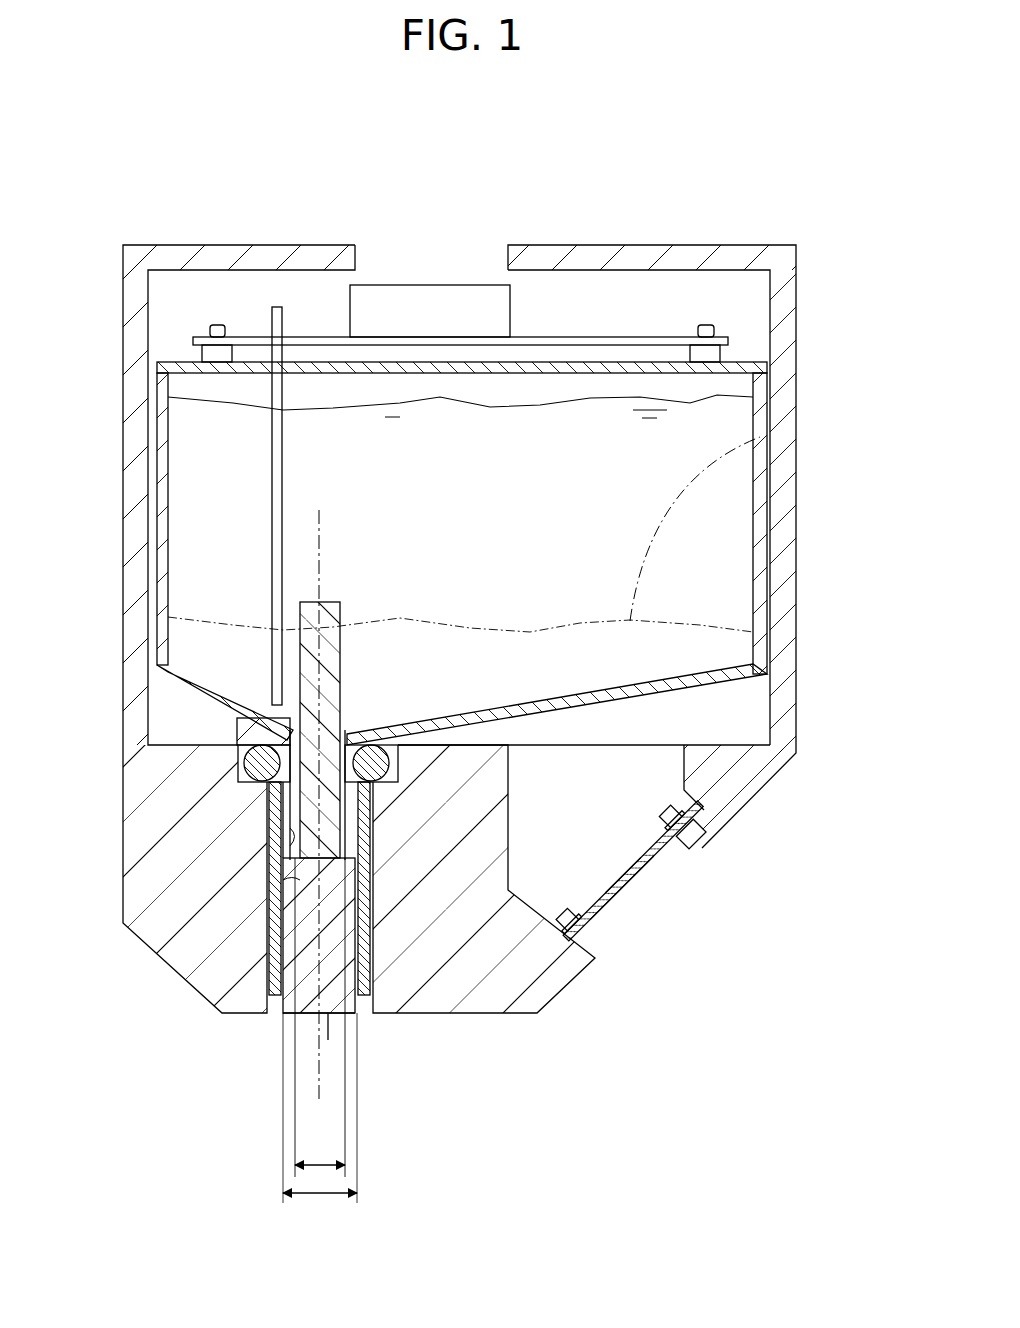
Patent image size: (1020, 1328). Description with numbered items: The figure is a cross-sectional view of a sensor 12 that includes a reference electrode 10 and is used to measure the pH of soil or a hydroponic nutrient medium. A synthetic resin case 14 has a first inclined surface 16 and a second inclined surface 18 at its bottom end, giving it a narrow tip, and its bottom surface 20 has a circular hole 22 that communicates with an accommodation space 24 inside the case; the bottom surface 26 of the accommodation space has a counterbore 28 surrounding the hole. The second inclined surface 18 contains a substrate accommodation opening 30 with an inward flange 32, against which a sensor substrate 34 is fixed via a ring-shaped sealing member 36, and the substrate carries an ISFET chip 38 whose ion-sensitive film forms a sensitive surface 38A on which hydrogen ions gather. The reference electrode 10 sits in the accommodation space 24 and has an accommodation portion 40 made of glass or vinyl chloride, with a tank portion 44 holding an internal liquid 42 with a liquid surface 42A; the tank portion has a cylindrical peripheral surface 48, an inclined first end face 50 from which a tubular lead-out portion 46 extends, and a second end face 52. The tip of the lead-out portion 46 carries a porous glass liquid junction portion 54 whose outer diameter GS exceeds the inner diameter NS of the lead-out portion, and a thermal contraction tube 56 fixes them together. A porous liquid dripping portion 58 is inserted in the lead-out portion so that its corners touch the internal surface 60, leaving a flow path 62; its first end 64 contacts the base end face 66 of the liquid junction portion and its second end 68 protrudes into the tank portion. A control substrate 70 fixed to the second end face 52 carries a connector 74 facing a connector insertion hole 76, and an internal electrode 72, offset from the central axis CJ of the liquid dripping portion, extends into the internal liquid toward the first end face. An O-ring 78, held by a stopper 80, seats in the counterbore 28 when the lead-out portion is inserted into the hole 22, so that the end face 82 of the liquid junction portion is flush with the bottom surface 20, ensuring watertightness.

The reference electrode 10 is at (555, 318).
The sensor 12 is at (610, 115).
The case 14 is at (798, 300).
The first inclined surface 16 is at (200, 980).
The second inclined surface 18 is at (745, 790).
The bottom surface 20 is at (505, 1016).
The hole 22 is at (340, 1016).
The accommodation space 24 is at (730, 300).
The bottom surface of accommodation space 26 is at (760, 745).
The counterbore 28 is at (383, 742).
The substrate accommodation opening 30 is at (622, 938).
The flange 32 is at (700, 838).
The sensor substrate 34 is at (620, 865).
The sealing member 36 is at (708, 845).
The ISFET chip 38 is at (640, 880).
The sensitive surface 38A is at (660, 872).
The accommodation portion 40 is at (160, 430).
The internal liquid 42 is at (727, 497).
The liquid surface 42A is at (760, 402).
The tank portion 44 is at (770, 537).
The lead-out portion 46 is at (288, 815).
The peripheral surface 48 is at (758, 610).
The first end face 50 is at (740, 706).
The second end face 52 is at (735, 358).
The liquid junction portion 54 is at (292, 1016).
The thermal contraction tube 56 is at (283, 1012).
The liquid dripping portion 58 is at (342, 640).
The internal surface 60 is at (300, 855).
The flow path 62 is at (272, 795).
The first end 64 is at (290, 880).
The base end face 66 is at (370, 1012).
The second end 68 is at (322, 605).
The control substrate 70 is at (255, 340).
The internal electrode 72 is at (268, 505).
The connector 74 is at (432, 300).
The connector insertion hole 76 is at (372, 255).
The O-ring 78 is at (255, 762).
The stopper 80 is at (238, 737).
The end face 82 is at (330, 1030).
The central axis CJ is at (320, 1160).
The inner diameter NS is at (330, 1180).
The outer diameter GS is at (320, 1196).